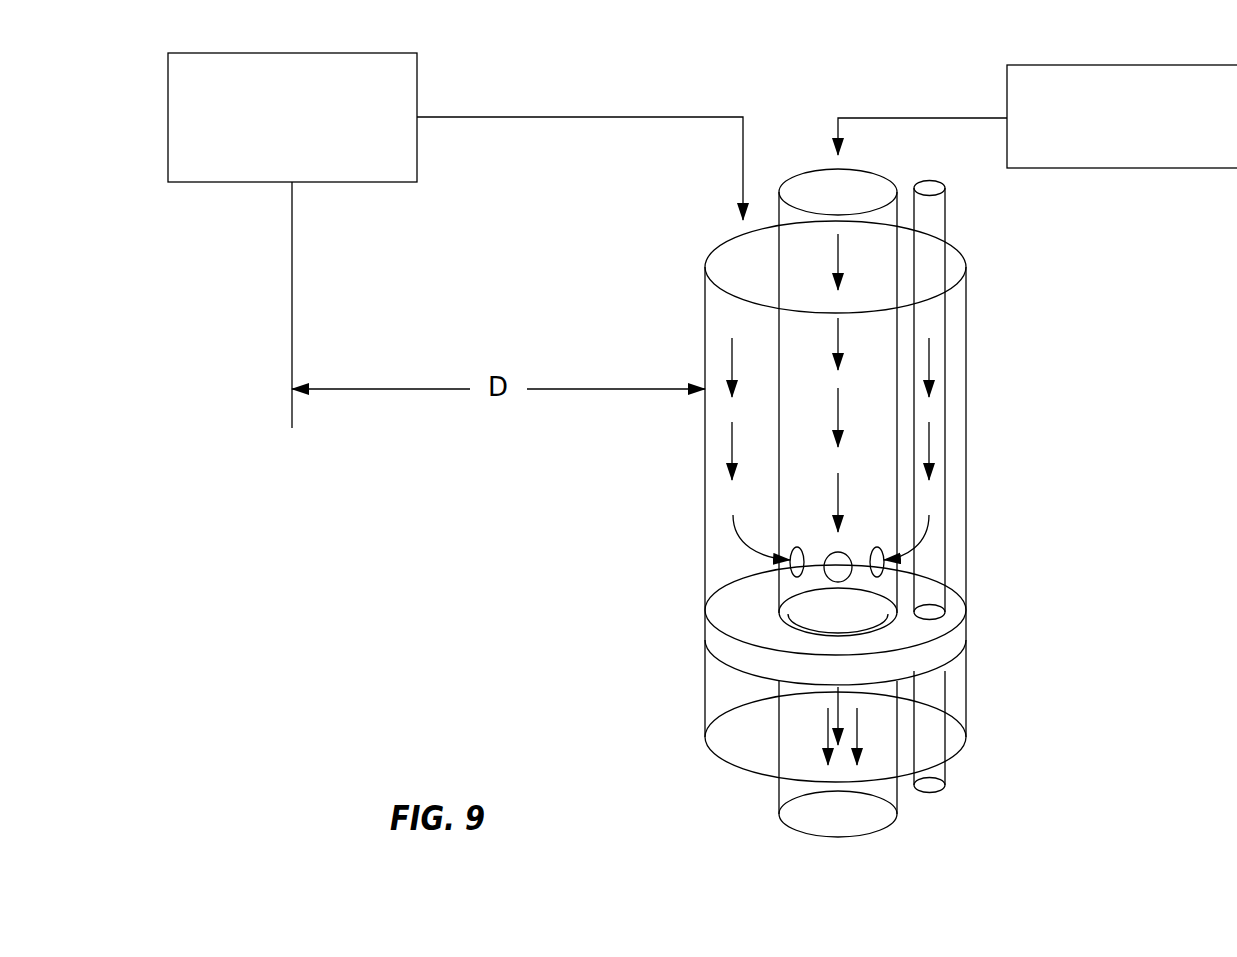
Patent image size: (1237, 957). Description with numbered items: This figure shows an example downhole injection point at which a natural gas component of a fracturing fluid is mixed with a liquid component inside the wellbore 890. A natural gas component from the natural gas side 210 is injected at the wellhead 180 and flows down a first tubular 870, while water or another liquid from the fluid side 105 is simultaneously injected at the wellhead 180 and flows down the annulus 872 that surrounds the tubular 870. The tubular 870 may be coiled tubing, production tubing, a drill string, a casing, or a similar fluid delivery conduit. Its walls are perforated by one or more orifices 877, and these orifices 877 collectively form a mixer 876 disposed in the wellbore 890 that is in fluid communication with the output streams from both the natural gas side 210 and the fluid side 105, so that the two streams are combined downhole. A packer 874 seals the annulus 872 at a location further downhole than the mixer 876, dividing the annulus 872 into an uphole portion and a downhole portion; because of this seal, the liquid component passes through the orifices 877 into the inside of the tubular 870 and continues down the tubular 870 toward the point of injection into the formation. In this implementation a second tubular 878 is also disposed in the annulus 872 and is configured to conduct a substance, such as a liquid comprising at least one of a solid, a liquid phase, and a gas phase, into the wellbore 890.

The natural gas side 210 is at (315, 171).
The fluid side 105 is at (1148, 152).
The wellhead 180 is at (982, 248).
The tubular 870 is at (798, 170).
The annulus 872 is at (706, 270).
The packer 874 is at (707, 657).
The mixer 876 is at (866, 584).
The orifices 877 is at (795, 577).
The second tubular 878 is at (947, 415).
The wellbore 890 is at (963, 320).